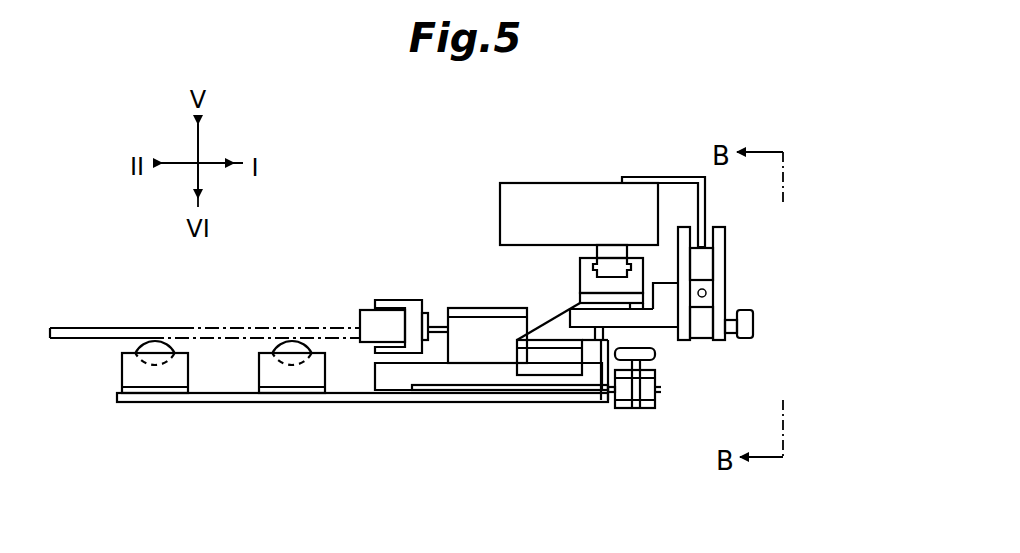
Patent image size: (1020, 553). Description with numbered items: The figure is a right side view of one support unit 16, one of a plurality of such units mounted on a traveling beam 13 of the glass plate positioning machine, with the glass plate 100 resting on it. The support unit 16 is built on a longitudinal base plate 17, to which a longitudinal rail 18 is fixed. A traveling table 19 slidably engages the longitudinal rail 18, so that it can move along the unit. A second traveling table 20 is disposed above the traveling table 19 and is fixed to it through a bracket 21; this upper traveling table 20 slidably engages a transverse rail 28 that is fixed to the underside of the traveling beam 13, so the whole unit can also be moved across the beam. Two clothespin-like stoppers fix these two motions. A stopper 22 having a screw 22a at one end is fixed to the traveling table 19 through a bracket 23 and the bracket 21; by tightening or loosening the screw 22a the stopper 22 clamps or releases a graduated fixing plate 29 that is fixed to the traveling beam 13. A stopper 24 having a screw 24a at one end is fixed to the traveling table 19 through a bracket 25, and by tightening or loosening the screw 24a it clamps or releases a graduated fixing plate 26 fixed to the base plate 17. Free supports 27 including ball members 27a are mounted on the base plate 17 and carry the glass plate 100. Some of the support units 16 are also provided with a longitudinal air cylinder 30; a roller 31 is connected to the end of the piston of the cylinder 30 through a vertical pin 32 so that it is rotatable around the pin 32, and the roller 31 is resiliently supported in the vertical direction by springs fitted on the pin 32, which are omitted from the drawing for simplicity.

The glass plate 100 is at (88, 328).
The free support 27 is at (118, 380).
The ball member 27a is at (158, 347).
The longitudinal base plate 17 is at (214, 397).
The support unit 16 is at (362, 446).
The longitudinal rail 18 is at (430, 375).
The graduated fixing plate 26 is at (462, 390).
The roller 31 is at (362, 315).
The vertical pin 32 is at (385, 303).
The longitudinal air cylinder 30 is at (470, 338).
The traveling table 19 is at (542, 363).
The bracket 25 is at (605, 373).
The stopper 24 is at (633, 408).
The screw 24a is at (653, 353).
The bracket 21 is at (553, 325).
The bracket 23 is at (660, 317).
The traveling table 20 is at (590, 285).
The transverse rail 28 is at (608, 258).
The traveling beam 13 is at (580, 202).
The graduated fixing plate 29 is at (705, 198).
The stopper 22 is at (727, 287).
The screw 22a is at (753, 330).